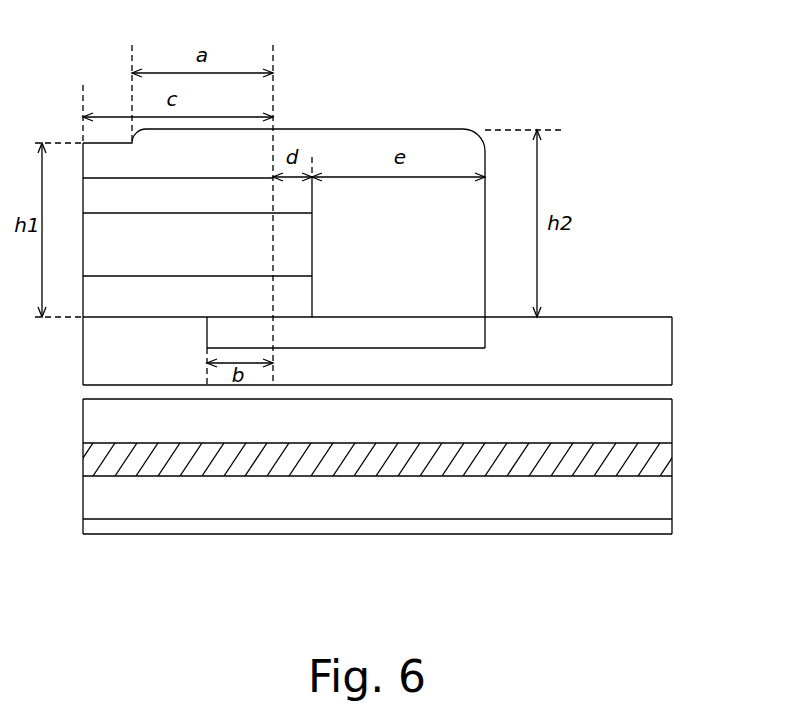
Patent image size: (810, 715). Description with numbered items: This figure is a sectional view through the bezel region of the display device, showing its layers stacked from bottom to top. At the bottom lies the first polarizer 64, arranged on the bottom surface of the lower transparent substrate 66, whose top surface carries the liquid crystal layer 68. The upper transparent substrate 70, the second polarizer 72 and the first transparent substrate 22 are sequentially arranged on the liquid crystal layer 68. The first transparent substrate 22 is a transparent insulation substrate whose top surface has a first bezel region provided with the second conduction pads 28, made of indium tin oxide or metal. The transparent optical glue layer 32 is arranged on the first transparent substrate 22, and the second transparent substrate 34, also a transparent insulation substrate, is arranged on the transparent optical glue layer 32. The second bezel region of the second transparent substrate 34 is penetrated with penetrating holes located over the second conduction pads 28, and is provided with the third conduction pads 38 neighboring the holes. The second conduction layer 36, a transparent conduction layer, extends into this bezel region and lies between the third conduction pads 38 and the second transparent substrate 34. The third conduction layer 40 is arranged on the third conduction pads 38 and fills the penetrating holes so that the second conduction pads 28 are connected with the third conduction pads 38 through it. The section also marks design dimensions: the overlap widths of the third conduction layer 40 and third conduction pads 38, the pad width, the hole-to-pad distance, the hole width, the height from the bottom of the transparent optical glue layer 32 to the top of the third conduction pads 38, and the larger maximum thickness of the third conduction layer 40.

The first transparent substrate 22 is at (655, 345).
The second conduction pads 28 is at (455, 327).
The transparent optical glue layer 32 is at (302, 290).
The second transparent substrate 34 is at (290, 238).
The second conduction layer 36 is at (110, 198).
The third conduction pads 38 is at (262, 152).
The third conduction layer 40 is at (355, 137).
The first polarizer 64 is at (348, 528).
The lower transparent substrate 66 is at (650, 495).
The liquid crystal layer 68 is at (108, 468).
The upper transparent substrate 70 is at (655, 415).
The second polarizer 72 is at (100, 393).